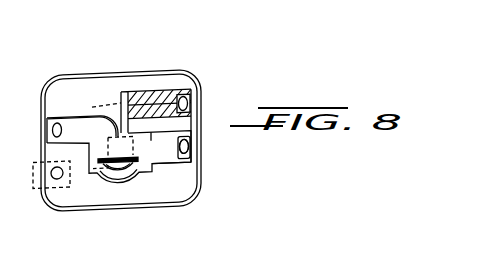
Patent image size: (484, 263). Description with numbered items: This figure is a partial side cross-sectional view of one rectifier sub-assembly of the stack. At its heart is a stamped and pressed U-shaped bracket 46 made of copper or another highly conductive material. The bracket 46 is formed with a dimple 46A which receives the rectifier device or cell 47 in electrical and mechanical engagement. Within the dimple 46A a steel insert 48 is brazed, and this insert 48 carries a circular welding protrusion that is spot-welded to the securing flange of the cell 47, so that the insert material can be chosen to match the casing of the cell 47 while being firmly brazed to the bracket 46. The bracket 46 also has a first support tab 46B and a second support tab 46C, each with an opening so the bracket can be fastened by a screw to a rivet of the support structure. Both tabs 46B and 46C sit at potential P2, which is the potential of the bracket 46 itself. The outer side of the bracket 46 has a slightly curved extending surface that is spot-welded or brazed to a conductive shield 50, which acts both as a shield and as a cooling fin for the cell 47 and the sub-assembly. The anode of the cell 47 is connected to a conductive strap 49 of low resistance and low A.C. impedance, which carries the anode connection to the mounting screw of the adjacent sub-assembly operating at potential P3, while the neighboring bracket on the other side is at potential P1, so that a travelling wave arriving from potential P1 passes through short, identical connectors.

The bracket 46 is at (90, 124).
The dimple 46A is at (124, 185).
The first support tab 46B is at (75, 110).
The second support tab 46C is at (168, 165).
The rectifier device 47 is at (128, 147).
The steel insert 48 is at (113, 172).
The conductive strap 49 is at (155, 101).
The conductive shield 50 is at (100, 211).
The potential P1 is at (53, 180).
The potential P2 is at (192, 154).
The potential P3 is at (188, 109).